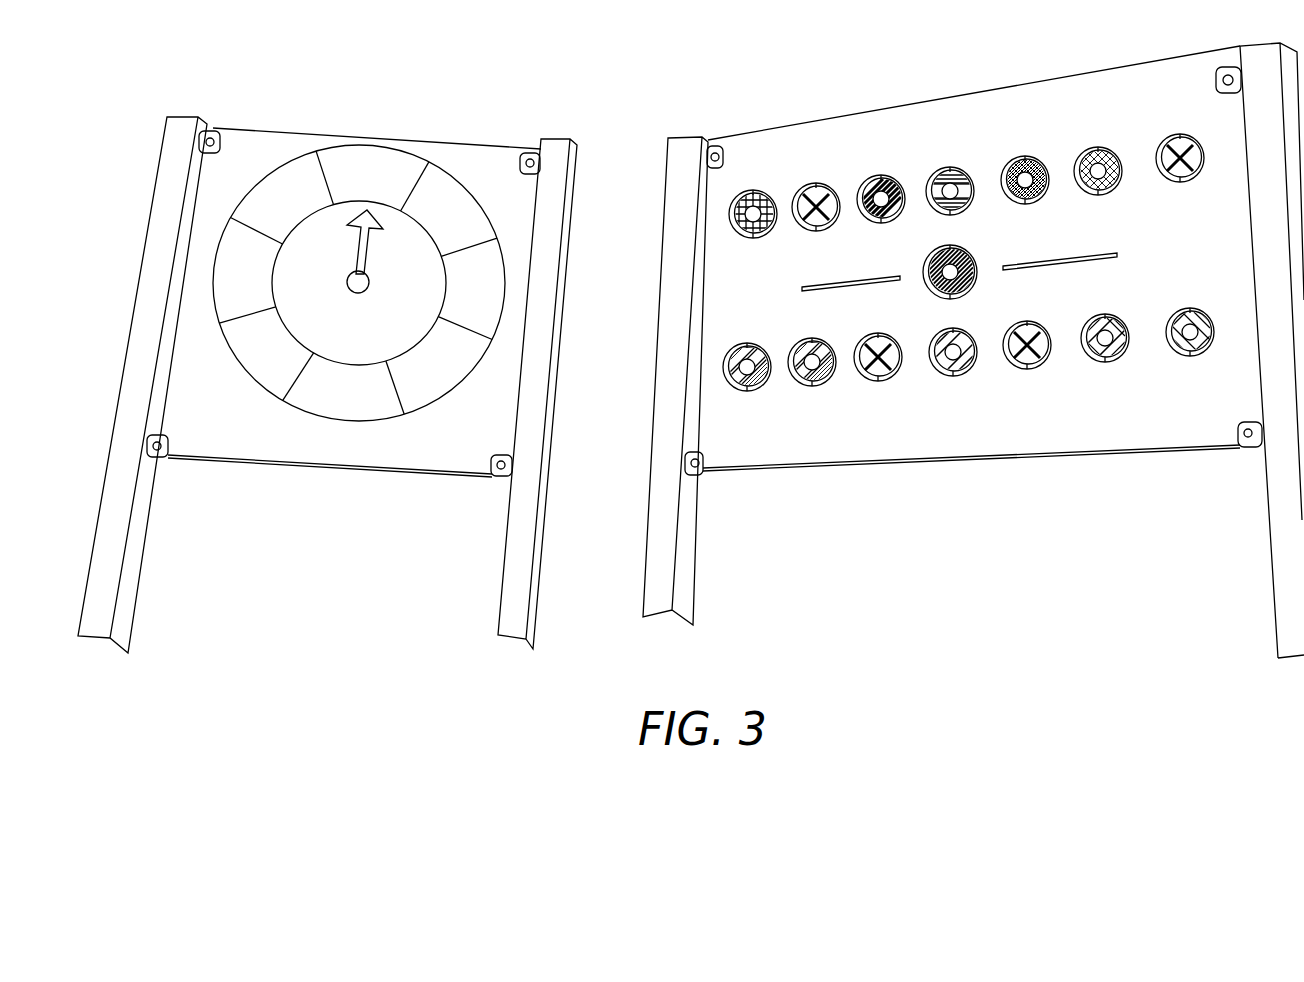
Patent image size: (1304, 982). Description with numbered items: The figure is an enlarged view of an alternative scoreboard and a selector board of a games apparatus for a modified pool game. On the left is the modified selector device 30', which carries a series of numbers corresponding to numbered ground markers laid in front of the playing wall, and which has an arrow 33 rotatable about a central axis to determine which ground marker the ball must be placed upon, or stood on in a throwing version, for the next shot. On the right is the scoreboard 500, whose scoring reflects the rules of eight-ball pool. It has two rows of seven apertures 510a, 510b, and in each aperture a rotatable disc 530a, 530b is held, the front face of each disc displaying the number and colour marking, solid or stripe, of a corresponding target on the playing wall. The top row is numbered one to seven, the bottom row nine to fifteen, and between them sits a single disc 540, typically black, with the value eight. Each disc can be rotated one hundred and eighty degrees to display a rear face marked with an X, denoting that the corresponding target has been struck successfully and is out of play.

The selector device 30' is at (327, 358).
The arrow 33 is at (386, 251).
The scoreboard 500 is at (950, 344).
The aperture 510a is at (718, 190).
The aperture 510b is at (852, 201).
The rotatable disc 530a is at (687, 214).
The rotatable disc 530b is at (842, 225).
The single disc 540 is at (980, 276).